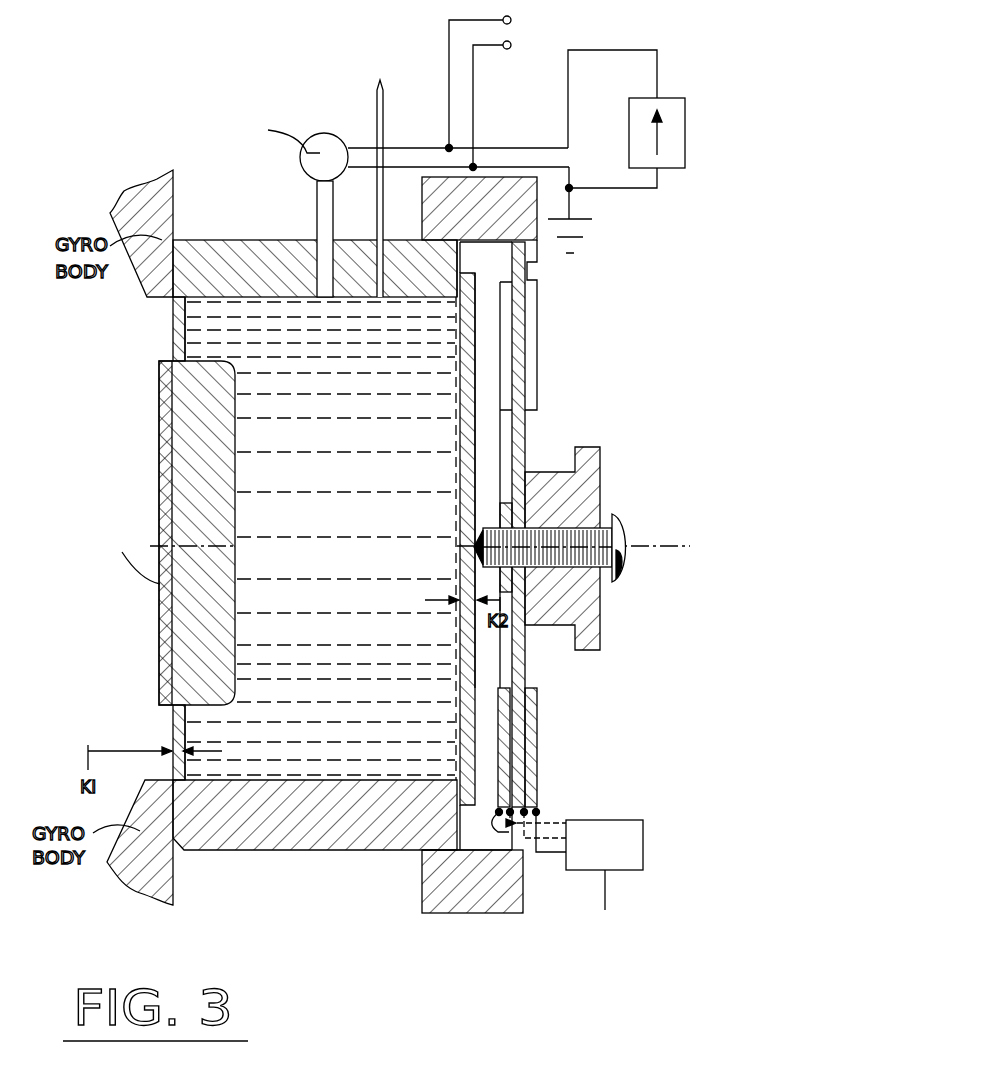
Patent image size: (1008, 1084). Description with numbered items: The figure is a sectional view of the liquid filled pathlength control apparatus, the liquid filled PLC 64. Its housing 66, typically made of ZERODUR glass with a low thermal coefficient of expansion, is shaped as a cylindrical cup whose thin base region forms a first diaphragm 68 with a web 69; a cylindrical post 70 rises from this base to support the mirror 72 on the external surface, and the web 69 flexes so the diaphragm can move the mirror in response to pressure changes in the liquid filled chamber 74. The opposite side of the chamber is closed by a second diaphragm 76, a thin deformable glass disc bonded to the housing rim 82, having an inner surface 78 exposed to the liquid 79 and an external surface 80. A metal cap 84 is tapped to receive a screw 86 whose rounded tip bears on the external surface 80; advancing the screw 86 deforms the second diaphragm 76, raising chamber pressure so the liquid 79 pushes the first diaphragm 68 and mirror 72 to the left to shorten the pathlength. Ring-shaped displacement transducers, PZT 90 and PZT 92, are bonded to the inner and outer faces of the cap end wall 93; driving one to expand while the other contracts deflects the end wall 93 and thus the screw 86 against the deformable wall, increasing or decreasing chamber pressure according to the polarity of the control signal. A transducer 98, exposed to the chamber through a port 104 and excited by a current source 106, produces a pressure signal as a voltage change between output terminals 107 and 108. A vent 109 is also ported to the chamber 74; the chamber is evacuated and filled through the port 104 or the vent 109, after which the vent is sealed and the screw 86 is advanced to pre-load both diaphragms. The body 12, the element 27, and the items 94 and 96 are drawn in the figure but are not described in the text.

The body 12 is at (253, 241).
The spacer 27 is at (424, 869).
The liquid filled PLC 64 is at (494, 99).
The housing 66 is at (337, 815).
The first diaphragm 68 is at (175, 348).
The web 69 is at (177, 738).
The cylindrical post 70 is at (207, 498).
The mirror 72 is at (163, 448).
The liquid filled chamber 74 is at (378, 558).
The second diaphragm 76 is at (468, 653).
The inner surface 78 is at (461, 380).
The liquid 79 is at (312, 595).
The external surface 80 is at (476, 750).
The housing rim 82 is at (457, 263).
The metal cap 84 is at (518, 200).
The screw 86 is at (622, 532).
The displacement transducer PZT 90 is at (512, 283).
The displacement transducer PZT 92 is at (531, 315).
The cap end wall 93 is at (518, 432).
The servo leads 94 is at (548, 832).
The servo 96 is at (556, 852).
The transducer 98 is at (317, 228).
The port 104 is at (325, 298).
The current source 106 is at (672, 152).
The output terminal 107 is at (498, 79).
The output terminal 108 is at (510, 101).
The vent 109 is at (381, 97).